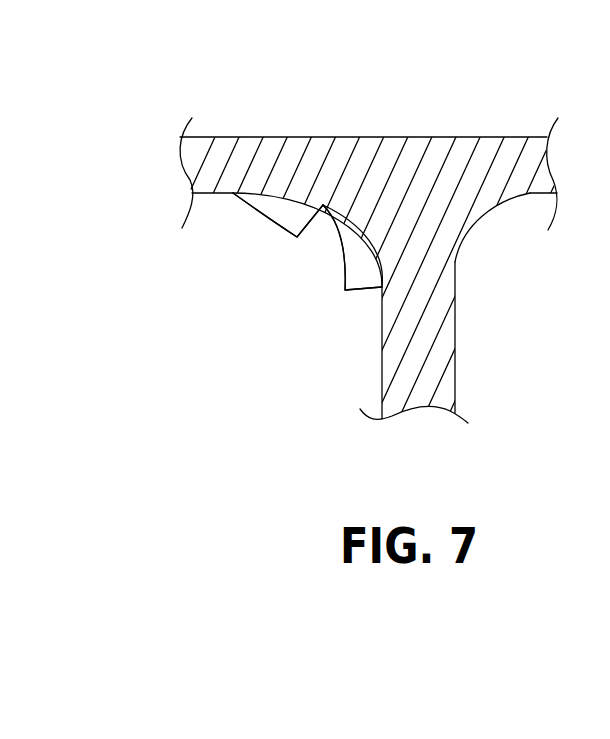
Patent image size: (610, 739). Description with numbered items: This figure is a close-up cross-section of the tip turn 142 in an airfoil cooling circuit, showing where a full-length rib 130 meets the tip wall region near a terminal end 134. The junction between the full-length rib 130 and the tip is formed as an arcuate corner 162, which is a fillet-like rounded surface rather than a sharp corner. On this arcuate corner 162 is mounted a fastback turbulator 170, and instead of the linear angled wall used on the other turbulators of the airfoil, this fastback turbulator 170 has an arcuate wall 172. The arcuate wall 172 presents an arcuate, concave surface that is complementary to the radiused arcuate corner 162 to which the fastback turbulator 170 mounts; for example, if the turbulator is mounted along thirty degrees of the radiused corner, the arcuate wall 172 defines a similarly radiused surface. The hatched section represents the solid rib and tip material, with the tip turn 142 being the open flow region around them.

The terminal end 134 is at (241, 137).
The full-length rib 130 is at (455, 398).
The arcuate corner 162 is at (362, 218).
The fastback turbulator 170 is at (289, 213).
The arcuate wall 172 is at (232, 196).
The tip turn 142 is at (306, 365).